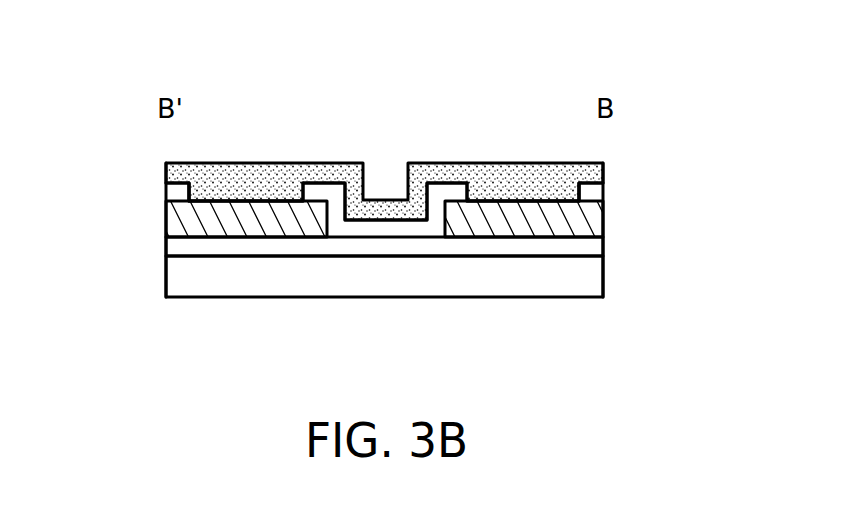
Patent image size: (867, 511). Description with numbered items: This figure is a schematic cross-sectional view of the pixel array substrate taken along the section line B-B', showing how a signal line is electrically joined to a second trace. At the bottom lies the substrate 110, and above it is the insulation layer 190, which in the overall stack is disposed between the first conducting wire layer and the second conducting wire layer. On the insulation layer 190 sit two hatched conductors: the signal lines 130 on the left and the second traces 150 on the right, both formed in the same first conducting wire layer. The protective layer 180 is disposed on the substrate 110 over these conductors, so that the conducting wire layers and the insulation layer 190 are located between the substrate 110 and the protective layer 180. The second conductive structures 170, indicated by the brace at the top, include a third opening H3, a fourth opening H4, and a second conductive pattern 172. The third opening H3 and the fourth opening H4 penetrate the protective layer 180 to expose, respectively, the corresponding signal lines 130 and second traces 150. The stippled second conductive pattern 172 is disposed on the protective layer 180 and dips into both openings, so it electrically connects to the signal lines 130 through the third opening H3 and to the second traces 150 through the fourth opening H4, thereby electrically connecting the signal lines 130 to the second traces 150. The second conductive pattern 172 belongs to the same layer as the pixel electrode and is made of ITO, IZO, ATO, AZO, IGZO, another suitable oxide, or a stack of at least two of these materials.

The substrate 110 is at (190, 278).
The insulation layer 190 is at (183, 245).
The signal lines 130 is at (182, 220).
The second traces 150 is at (598, 223).
The second conductive pattern 172 is at (288, 166).
The protective layer 180 is at (180, 188).
The second conductive structures 170 is at (398, 72).
The third opening H3 is at (256, 182).
The fourth opening H4 is at (494, 180).